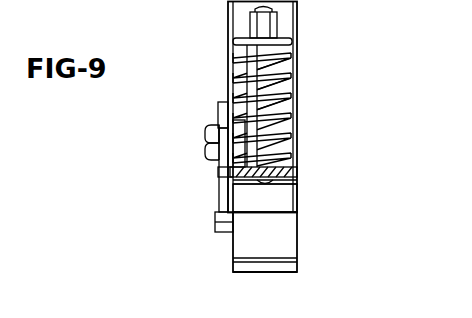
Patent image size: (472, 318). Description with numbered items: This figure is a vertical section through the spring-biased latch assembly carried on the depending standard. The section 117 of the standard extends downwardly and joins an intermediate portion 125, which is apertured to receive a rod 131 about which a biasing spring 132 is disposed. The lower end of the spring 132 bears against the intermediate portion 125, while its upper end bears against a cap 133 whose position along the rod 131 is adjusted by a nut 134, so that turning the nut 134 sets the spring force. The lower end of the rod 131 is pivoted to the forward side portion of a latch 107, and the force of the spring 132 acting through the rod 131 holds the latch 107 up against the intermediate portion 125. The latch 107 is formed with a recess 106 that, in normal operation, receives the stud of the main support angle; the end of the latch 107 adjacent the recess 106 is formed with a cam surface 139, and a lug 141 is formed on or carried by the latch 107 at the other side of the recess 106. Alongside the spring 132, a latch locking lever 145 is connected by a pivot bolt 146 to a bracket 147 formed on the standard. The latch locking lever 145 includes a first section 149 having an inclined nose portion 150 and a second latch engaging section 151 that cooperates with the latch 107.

The section of standard 117 is at (232, 20).
The nut 134 is at (273, 22).
The cap 133 is at (290, 41).
The biasing spring 132 is at (279, 72).
The rod 131 is at (262, 100).
The intermediate portion 125 is at (290, 172).
The recess 106 is at (270, 197).
The cam surface 139 is at (270, 230).
The latch 107 is at (297, 272).
The latch locking lever 145 is at (220, 102).
The pivot bolt 146 is at (213, 128).
The inclined nose portion 150 is at (215, 148).
The bracket 147 is at (236, 147).
The first section 149 is at (222, 170).
The second latch engaging section 151 is at (225, 192).
The lug 141 is at (222, 222).